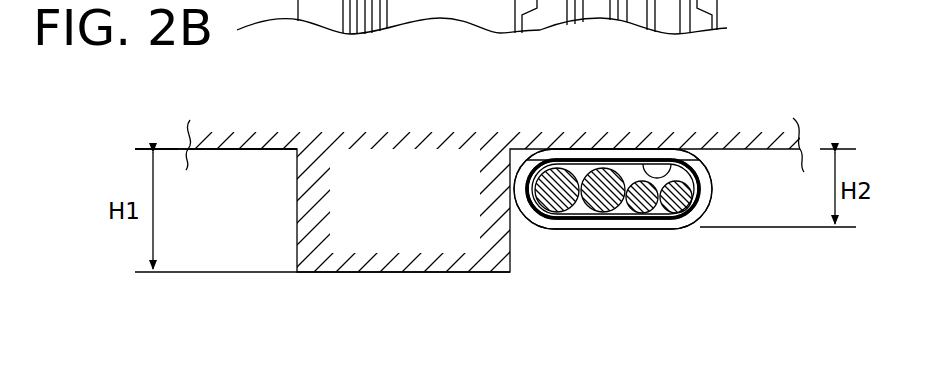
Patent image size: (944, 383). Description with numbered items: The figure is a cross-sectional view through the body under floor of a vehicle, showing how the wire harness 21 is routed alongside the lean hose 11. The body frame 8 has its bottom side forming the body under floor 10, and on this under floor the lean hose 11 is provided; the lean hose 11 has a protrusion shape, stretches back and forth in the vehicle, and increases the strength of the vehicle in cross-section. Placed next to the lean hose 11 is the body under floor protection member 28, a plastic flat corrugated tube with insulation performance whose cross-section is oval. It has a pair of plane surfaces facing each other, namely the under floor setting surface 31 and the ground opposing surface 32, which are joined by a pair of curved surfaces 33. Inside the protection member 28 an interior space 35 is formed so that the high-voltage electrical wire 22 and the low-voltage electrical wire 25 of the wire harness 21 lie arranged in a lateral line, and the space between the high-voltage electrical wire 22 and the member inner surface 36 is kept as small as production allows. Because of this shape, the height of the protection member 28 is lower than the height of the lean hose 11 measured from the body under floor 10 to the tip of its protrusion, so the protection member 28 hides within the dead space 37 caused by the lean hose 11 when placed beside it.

The body frame 8 is at (297, 148).
The body under floor 10 is at (238, 150).
The lean hose 11 is at (400, 264).
The wire harness 21 is at (542, 231).
The high-voltage electrical wire 22 is at (600, 172).
The low-voltage electrical wire 25 is at (668, 216).
The body under floor protection member 28 is at (715, 168).
The under floor setting surface 31 is at (605, 150).
The ground opposing surface 32 is at (592, 230).
The curved surfaces 33 is at (512, 186).
The interior space 35 is at (572, 216).
The member inner surface 36 is at (690, 150).
The dead space 37 is at (211, 188).